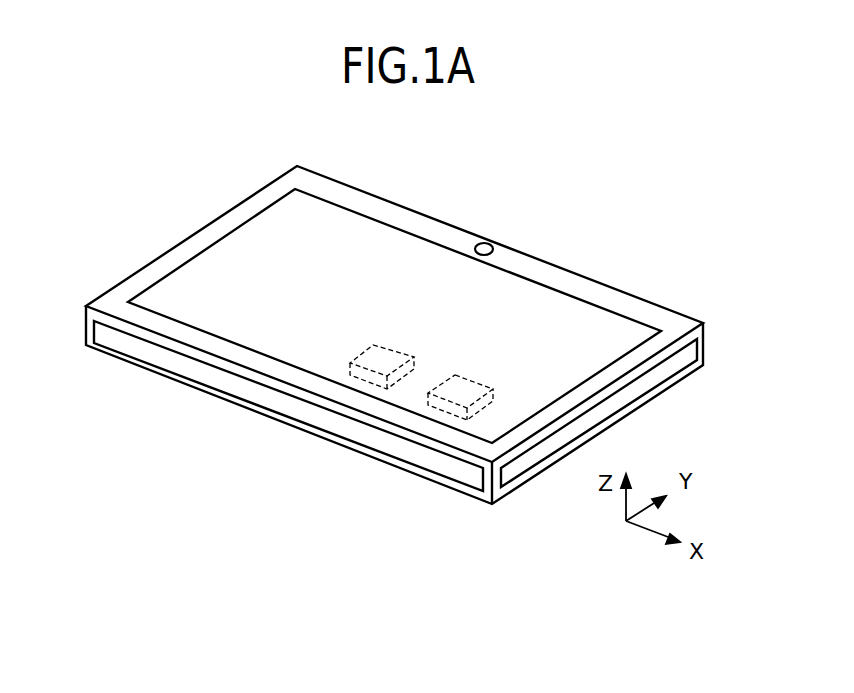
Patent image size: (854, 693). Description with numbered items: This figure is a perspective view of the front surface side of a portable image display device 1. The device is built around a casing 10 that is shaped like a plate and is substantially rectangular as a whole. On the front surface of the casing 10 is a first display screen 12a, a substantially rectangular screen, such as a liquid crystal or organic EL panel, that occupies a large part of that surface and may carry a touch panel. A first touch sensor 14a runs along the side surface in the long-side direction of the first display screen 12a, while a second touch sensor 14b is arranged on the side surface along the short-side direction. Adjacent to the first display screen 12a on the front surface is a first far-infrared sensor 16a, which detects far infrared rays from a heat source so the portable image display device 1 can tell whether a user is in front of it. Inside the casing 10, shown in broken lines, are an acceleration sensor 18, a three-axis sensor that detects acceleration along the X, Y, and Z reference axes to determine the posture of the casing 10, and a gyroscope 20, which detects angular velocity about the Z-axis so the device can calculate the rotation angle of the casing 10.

The portable image display device 1 is at (664, 183).
The casing 10 is at (646, 298).
The first display screen 12a is at (245, 220).
The first touch sensor 14a is at (415, 465).
The second touch sensor 14b is at (643, 390).
The first far-infrared sensor 16a is at (485, 240).
The acceleration sensor 18 is at (473, 382).
The gyroscope 20 is at (362, 353).